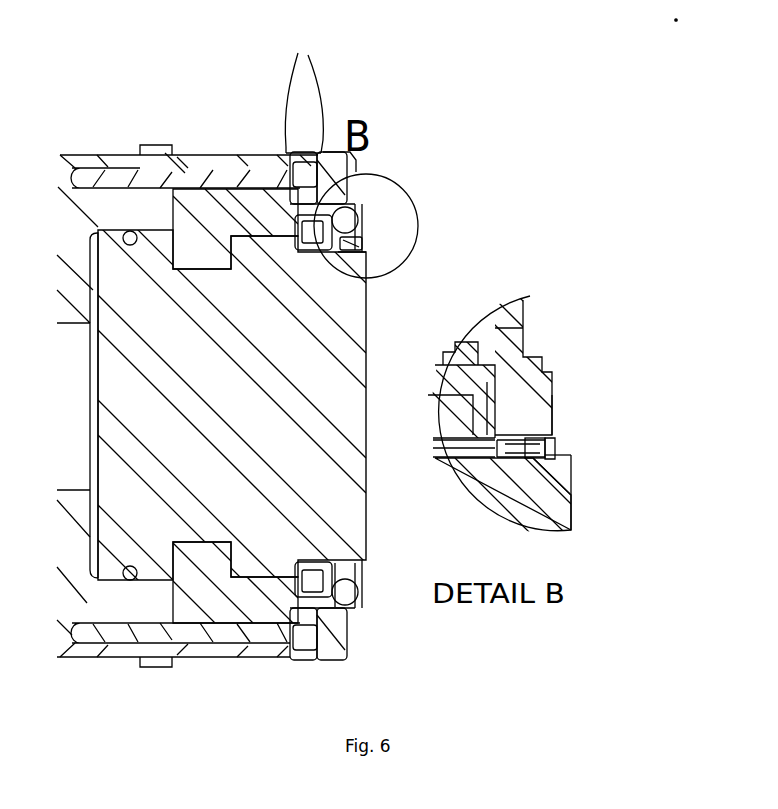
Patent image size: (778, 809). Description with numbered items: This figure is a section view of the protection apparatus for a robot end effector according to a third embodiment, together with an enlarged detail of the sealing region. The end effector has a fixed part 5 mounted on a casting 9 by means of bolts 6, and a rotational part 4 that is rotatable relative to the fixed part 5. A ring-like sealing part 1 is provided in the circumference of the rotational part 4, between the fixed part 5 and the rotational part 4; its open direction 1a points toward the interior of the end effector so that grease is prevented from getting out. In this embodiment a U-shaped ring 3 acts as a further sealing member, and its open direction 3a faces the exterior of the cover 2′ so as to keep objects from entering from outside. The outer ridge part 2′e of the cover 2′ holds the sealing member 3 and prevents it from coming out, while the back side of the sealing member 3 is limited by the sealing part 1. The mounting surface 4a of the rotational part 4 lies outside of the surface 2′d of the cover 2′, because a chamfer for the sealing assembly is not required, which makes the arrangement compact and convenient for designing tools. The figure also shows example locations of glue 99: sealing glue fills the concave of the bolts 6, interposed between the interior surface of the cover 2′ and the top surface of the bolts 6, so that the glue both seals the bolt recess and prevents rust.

The sealing part 1 is at (463, 393).
The open direction 1a is at (447, 415).
The cover 2′ is at (528, 390).
The surface of the cover 2′d is at (553, 410).
The outer ridge part 2′e is at (550, 450).
The U-shaped ring 3 is at (362, 240).
The open direction 3a is at (545, 442).
The rotational part 4 is at (358, 522).
The mounting surface 4a is at (572, 497).
The fixed part 5 is at (208, 208).
The bolts 6 is at (157, 643).
The casting 9 is at (85, 203).
The glue 99 is at (304, 81).